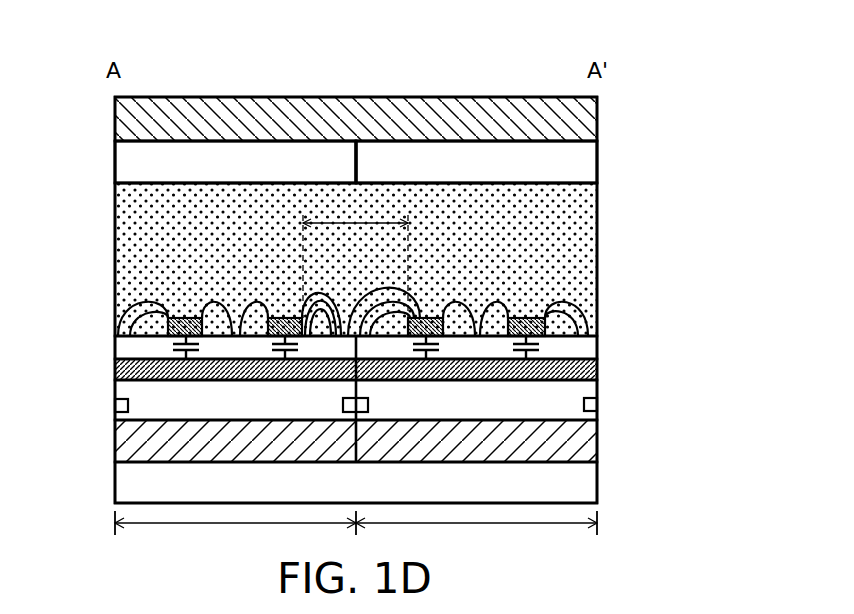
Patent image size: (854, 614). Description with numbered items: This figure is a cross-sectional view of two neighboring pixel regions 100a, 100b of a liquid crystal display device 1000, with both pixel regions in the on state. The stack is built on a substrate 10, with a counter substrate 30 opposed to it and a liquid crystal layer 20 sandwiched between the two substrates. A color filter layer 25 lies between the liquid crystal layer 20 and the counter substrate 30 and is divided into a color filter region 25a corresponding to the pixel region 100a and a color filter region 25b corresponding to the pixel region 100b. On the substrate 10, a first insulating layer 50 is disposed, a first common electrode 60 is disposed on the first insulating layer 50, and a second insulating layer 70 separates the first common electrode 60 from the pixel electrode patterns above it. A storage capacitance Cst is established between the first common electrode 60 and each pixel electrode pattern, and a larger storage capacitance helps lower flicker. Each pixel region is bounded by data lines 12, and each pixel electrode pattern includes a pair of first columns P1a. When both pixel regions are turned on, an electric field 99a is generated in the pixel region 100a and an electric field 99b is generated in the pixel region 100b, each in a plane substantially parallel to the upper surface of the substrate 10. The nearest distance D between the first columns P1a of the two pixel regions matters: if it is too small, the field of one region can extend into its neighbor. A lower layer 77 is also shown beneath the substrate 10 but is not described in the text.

The liquid crystal display (LCD) device 1000 is at (639, 93).
The counter substrate 30 is at (590, 115).
The color filter layer 25 is at (433, 50).
The color filter region 25a is at (400, 152).
The color filter region 25b is at (309, 155).
The liquid crystal layer 20 is at (590, 211).
The electric field 99a is at (390, 290).
The electric field 99b is at (318, 296).
The nearest distance D is at (355, 258).
The first column P1a is at (185, 318).
The second insulating layer 70 is at (588, 346).
The storage capacitance Cst is at (170, 345).
The first common electrode 60 is at (590, 369).
The first insulating layer 50 is at (590, 393).
The data line 12 is at (115, 405).
The substrate 10 is at (590, 446).
The back plate / support layer 77 is at (588, 480).
The pixel region 100b is at (235, 535).
The pixel region 100a is at (476, 535).